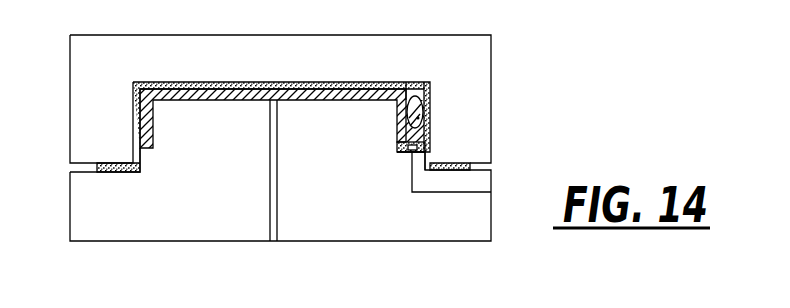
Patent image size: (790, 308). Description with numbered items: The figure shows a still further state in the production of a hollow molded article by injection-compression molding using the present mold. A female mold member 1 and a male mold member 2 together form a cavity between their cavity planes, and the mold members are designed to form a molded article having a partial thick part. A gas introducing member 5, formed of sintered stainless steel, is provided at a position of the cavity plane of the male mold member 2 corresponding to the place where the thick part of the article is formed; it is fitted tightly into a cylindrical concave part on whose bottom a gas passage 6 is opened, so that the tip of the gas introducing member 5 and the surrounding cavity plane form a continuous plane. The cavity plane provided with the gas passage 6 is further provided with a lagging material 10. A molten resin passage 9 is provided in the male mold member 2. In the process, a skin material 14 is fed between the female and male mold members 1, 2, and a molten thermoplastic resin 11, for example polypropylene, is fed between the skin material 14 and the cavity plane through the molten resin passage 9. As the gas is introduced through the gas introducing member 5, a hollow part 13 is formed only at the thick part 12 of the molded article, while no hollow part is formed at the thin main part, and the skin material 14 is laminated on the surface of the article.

The female mold member 1 is at (248, 67).
The male mold member 2 is at (217, 202).
The gas introducing member 5 is at (428, 148).
The gas passage 6 is at (460, 192).
The molten resin passage 9 is at (271, 212).
The lagging material 10 is at (398, 147).
The molten thermoplastic resin 11 is at (316, 90).
The thick part 12 is at (413, 90).
The hollow part 13 is at (416, 118).
The skin material 14 is at (427, 93).